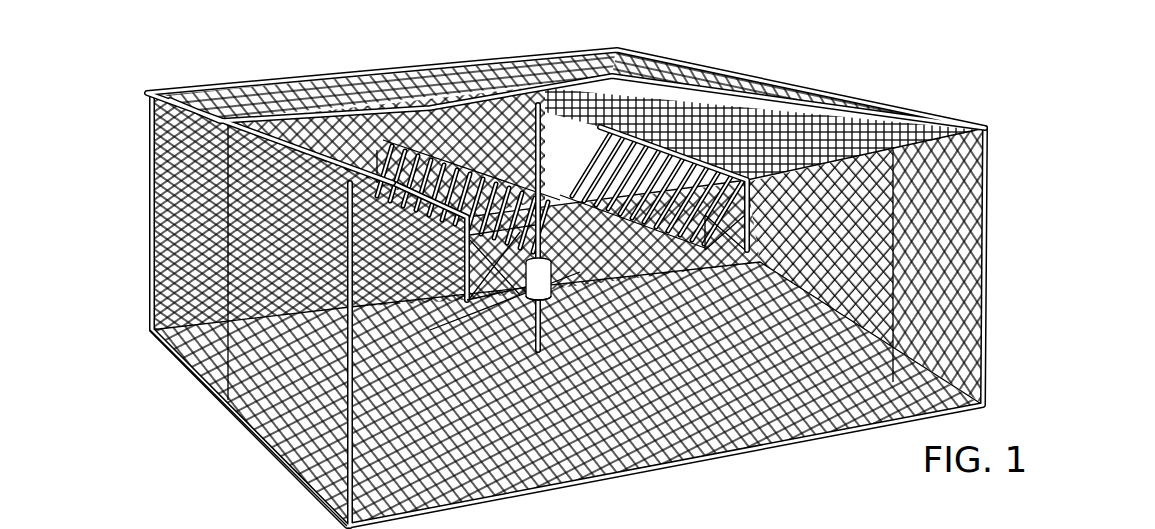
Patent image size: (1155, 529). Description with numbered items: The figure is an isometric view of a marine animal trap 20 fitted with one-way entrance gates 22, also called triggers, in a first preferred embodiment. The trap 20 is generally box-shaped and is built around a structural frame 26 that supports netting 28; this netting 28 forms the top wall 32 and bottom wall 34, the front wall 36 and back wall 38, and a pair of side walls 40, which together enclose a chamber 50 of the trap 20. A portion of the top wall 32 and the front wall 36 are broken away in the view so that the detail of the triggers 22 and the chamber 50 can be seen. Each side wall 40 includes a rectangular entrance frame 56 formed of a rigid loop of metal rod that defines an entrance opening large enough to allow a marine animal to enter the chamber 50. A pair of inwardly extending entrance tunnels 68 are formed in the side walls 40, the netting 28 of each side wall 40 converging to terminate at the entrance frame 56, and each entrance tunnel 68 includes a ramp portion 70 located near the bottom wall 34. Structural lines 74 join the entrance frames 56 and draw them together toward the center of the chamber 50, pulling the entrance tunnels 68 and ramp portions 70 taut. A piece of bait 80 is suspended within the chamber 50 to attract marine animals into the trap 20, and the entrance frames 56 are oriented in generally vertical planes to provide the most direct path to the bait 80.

The marine animal trap 20 is at (845, 74).
The one-way entrance gates 22 is at (437, 136).
The structural frame 26 is at (948, 112).
The netting 28 is at (946, 200).
The top wall 32 is at (862, 118).
The bottom wall 34 is at (813, 379).
The front wall 36 is at (803, 420).
The back wall 38 is at (357, 140).
The side walls 40 is at (862, 254).
The chamber 50 is at (640, 406).
The entrance frame 56 is at (737, 168).
The entrance tunnels 68 is at (208, 430).
The ramp portion 70 is at (290, 385).
The structural lines 74 is at (555, 256).
The bait 80 is at (575, 300).